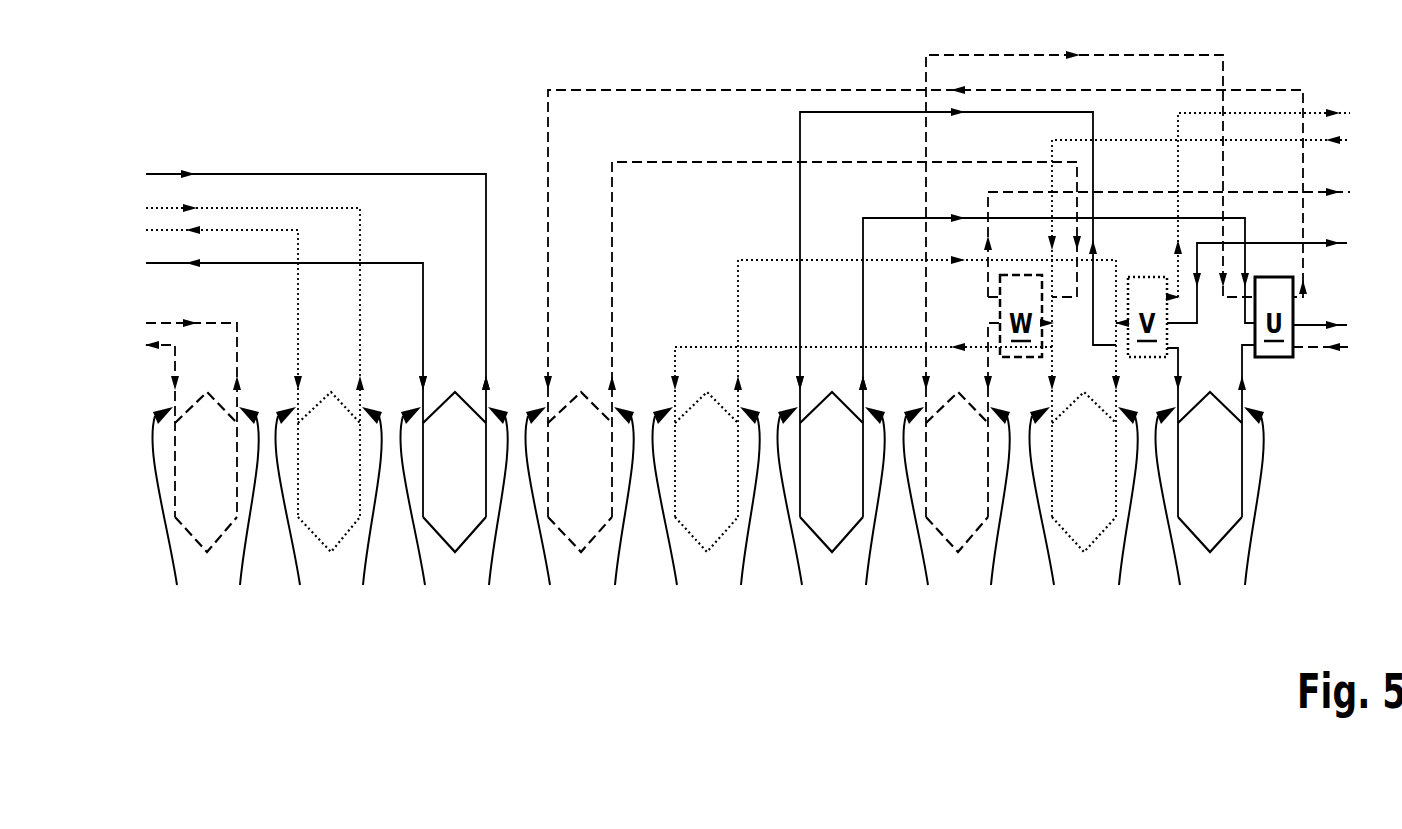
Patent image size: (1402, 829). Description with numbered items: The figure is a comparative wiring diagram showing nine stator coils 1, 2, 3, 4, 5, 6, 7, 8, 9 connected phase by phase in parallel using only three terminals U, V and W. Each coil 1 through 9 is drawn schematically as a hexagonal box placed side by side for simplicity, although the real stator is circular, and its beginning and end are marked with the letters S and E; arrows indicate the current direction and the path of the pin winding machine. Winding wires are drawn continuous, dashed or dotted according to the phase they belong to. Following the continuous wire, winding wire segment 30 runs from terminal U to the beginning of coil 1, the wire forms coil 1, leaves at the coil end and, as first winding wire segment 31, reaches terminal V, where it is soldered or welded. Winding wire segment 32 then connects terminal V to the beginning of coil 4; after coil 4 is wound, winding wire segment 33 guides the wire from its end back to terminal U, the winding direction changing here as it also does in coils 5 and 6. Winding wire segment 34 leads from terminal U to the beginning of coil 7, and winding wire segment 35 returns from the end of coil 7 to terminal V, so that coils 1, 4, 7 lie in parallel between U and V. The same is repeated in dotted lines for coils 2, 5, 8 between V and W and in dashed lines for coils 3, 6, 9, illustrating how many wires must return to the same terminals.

The coil 1 is at (1201, 487).
The coil 2 is at (1075, 487).
The coil 3 is at (949, 487).
The coil 4 is at (823, 487).
The coil 5 is at (698, 487).
The coil 6 is at (572, 487).
The coil 7 is at (446, 487).
The coil 8 is at (322, 487).
The coil 9 is at (198, 487).
The winding wire segment 30 is at (1246, 370).
The first winding wire segment 31 is at (1182, 358).
The winding wire segment 32 is at (800, 200).
The winding wire segment 33 is at (868, 218).
The winding wire segment 34 is at (162, 172).
The winding wire segment 35 is at (396, 262).